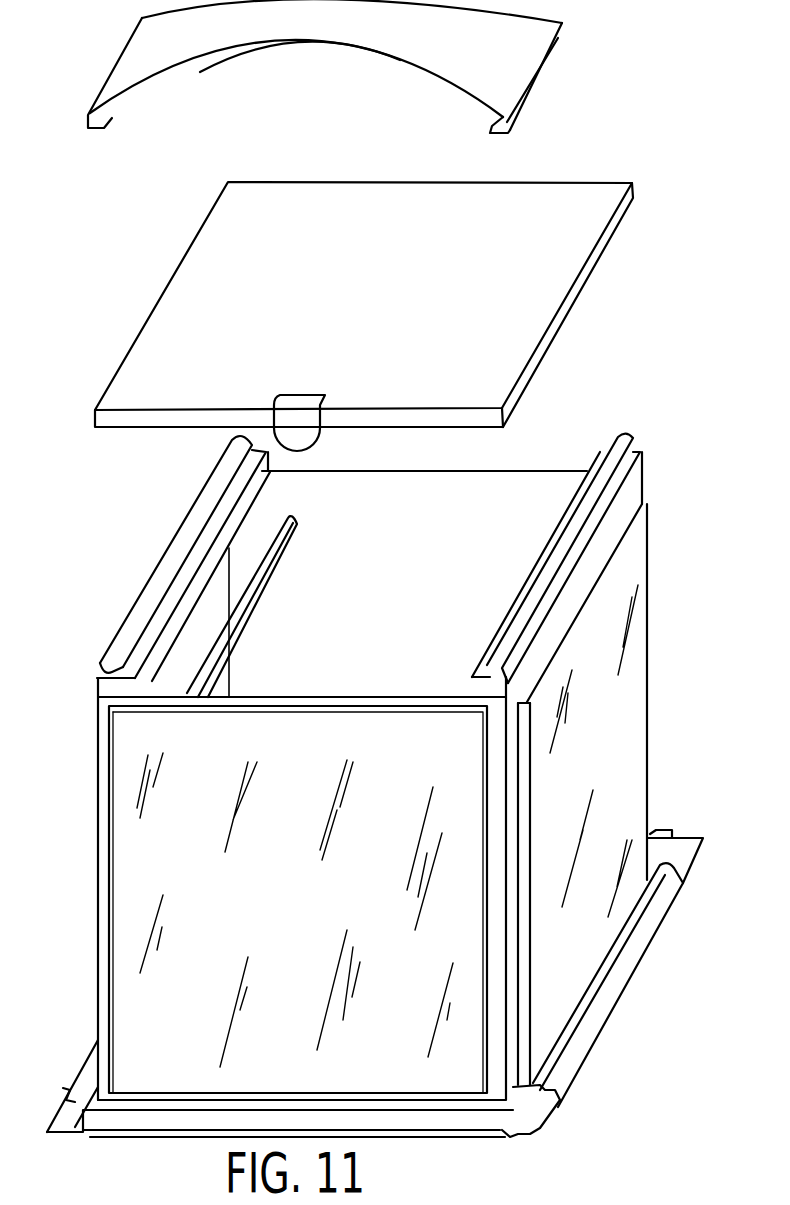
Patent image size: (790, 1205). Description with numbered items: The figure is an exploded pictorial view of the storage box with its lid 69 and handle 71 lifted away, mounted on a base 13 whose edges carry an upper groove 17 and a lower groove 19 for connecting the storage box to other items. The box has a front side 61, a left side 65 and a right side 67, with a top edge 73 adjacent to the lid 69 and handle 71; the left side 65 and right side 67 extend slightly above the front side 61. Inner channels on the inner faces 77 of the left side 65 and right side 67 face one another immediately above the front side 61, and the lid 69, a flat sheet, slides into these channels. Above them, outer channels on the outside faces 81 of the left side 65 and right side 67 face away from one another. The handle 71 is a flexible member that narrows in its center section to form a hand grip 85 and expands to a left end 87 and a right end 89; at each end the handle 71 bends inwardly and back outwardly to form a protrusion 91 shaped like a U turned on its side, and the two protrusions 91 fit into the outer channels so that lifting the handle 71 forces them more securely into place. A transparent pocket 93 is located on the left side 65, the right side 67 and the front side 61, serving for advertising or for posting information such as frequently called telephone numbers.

The base 13 is at (523, 1115).
The upper groove 17 is at (630, 950).
The lower groove 19 is at (570, 1083).
The front side 61 is at (280, 905).
The left side 65 is at (97, 785).
The right side 67 is at (627, 487).
The lid 69 is at (513, 298).
The handle 71 is at (478, 70).
The top edge 73 is at (307, 697).
The inner face 77 is at (536, 494).
The outside face 81 is at (513, 1007).
The hand grip 85 is at (317, 28).
The left end 87 is at (125, 53).
The right end 89 is at (550, 62).
The protrusion 91 is at (487, 128).
The pocket 93 is at (148, 832).